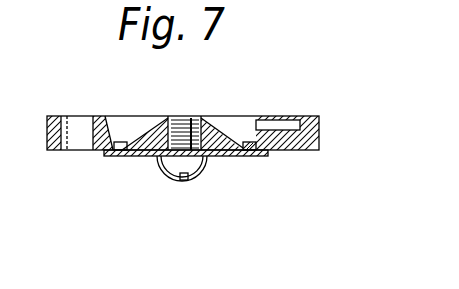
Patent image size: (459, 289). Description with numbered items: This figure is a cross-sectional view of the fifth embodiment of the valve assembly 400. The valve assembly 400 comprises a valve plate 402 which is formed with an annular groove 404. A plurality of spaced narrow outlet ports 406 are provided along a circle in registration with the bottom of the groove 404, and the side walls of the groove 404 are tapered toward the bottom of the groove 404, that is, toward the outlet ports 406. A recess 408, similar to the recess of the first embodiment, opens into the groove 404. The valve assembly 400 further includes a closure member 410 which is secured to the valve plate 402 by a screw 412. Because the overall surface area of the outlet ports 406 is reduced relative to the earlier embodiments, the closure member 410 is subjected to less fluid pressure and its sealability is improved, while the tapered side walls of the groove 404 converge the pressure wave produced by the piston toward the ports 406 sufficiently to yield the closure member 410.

The valve assembly 400 is at (346, 104).
The valve plate 402 is at (320, 143).
The annular groove 404 is at (228, 123).
The outlet ports 406 is at (250, 157).
The recess 408 is at (295, 121).
The closure member 410 is at (130, 157).
The screw 412 is at (180, 180).